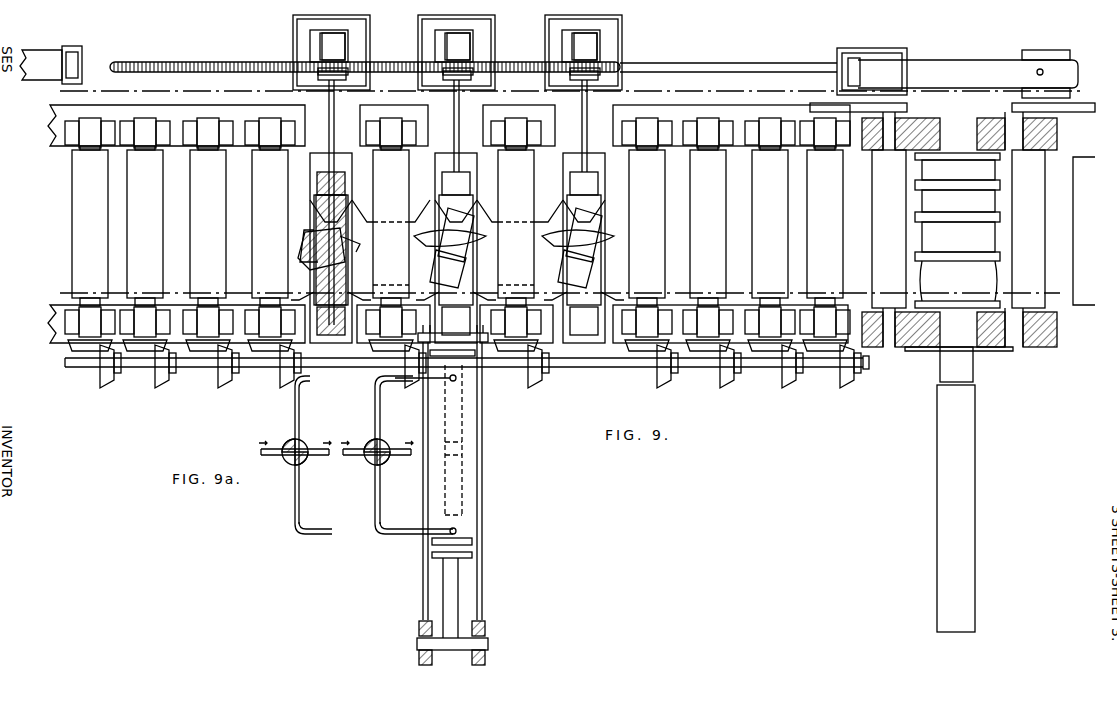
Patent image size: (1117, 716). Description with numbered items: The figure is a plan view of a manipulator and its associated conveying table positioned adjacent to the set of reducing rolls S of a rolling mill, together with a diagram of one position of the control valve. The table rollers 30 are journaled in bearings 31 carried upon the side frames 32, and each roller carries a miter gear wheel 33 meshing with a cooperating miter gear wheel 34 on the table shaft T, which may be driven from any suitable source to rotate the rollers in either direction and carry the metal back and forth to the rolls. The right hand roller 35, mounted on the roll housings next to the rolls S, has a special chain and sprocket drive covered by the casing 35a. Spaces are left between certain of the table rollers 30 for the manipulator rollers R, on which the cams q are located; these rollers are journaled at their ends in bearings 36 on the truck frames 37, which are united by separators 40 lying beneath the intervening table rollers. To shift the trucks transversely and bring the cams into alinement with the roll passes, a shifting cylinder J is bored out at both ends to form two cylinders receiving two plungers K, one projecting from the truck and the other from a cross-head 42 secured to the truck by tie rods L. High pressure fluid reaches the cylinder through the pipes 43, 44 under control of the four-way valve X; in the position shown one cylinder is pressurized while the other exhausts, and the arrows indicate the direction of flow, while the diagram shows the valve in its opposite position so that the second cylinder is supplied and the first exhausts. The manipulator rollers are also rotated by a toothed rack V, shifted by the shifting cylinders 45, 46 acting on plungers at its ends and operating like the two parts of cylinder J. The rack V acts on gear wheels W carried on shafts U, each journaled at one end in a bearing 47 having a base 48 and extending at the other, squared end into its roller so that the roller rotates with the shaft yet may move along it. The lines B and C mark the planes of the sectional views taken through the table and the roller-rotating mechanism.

In FIG. 9, the table rollers 30 is at (82, 206).
In FIG. 9, the bearings 31 is at (194, 120).
In FIG. 9, the side frame 32 is at (240, 149).
In FIG. 9, the miter gear wheels 33 is at (70, 350).
In FIG. 9, the miter gear wheels 34 is at (106, 382).
In FIG. 9, the right hand roller 35 is at (860, 208).
In FIG. 9, the casing 35a is at (908, 106).
In FIG. 9, the bearings 36 is at (346, 180).
In FIG. 9, the truck frames 37 is at (318, 166).
In FIG. 9, the separators 40 is at (366, 214).
In FIG. 9, the cross-head 42 is at (455, 648).
In FIG. 9, the pipe 43 is at (366, 405).
In FIG. 9A, the pipe 43 is at (286, 405).
In FIG. 9, the pipe 44 is at (366, 492).
In FIG. 9A, the pipe 44 is at (286, 492).
In FIG. 9, the shifting cylinder 45 is at (50, 50).
In FIG. 9, the shifting cylinder 46 is at (916, 64).
In FIG. 9, the bearing 47 is at (322, 38).
In FIG. 9, the bases 48 is at (368, 24).
In FIG. 9, the line B— B is at (64, 291).
In FIG. 9, the line C— C is at (60, 112).
In FIG. 9, the shifting cylinder J is at (472, 486).
In FIG. 9, the plungers K is at (455, 422).
In FIG. 9, the tie rods L is at (422, 576).
In FIG. 9, the manipulator rollers R is at (314, 210).
In FIG. 9, the reducing rolls S is at (987, 276).
In FIG. 9, the table shaft T is at (84, 372).
In FIG. 9, the shafts U is at (334, 132).
In FIG. 9, the toothed rack V is at (142, 58).
In FIG. 9, the gear wheels W is at (352, 62).
In FIG. 9, the four-way valve X is at (377, 458).
In FIG. 9A, the four-way valve X is at (295, 458).
In FIG. 9, the cams q is at (448, 244).